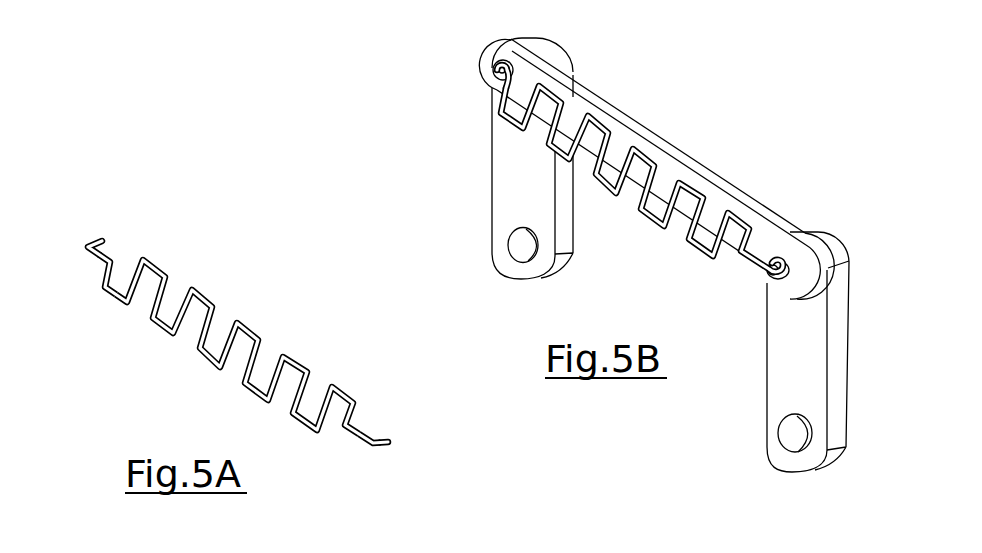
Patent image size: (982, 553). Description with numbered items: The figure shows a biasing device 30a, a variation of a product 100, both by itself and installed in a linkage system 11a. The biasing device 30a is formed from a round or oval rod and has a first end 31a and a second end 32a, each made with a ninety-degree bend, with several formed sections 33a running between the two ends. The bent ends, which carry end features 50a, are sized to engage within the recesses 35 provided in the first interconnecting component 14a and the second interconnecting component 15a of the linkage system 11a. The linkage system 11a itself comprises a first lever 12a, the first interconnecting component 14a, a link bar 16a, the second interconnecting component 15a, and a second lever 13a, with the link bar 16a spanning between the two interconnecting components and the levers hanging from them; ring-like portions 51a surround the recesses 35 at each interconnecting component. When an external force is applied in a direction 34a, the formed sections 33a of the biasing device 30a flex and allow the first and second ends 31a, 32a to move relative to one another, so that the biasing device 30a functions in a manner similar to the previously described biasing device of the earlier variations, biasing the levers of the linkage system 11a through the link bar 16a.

In FIG. 5A, the spring assembly 100 is at (287, 233).
In FIG. 5B, the spring assembly 100 is at (830, 94).
In FIG. 5B, the linkage system 11a is at (656, 100).
In FIG. 5B, the first lever 12a is at (491, 187).
In FIG. 5B, the second lever 13a is at (767, 376).
In FIG. 5B, the first interconnecting component 14a is at (484, 72).
In FIG. 5B, the second interconnecting component 15a is at (773, 257).
In FIG. 5B, the link bar 16a is at (684, 150).
In FIG. 5A, the biasing device 30a is at (206, 362).
In FIG. 5B, the biasing device 30a is at (657, 232).
In FIG. 5A, the first end 31a is at (87, 243).
In FIG. 5A, the second end 32a is at (388, 449).
In FIG. 5A, the formed sections 33a is at (162, 263).
In FIG. 5B, the direction 34a is at (792, 278).
In FIG. 5B, the recesses 35 is at (500, 66).
In FIG. 5A, the hook end 50a is at (104, 243).
In FIG. 5B, the pivot ring 51a is at (486, 64).